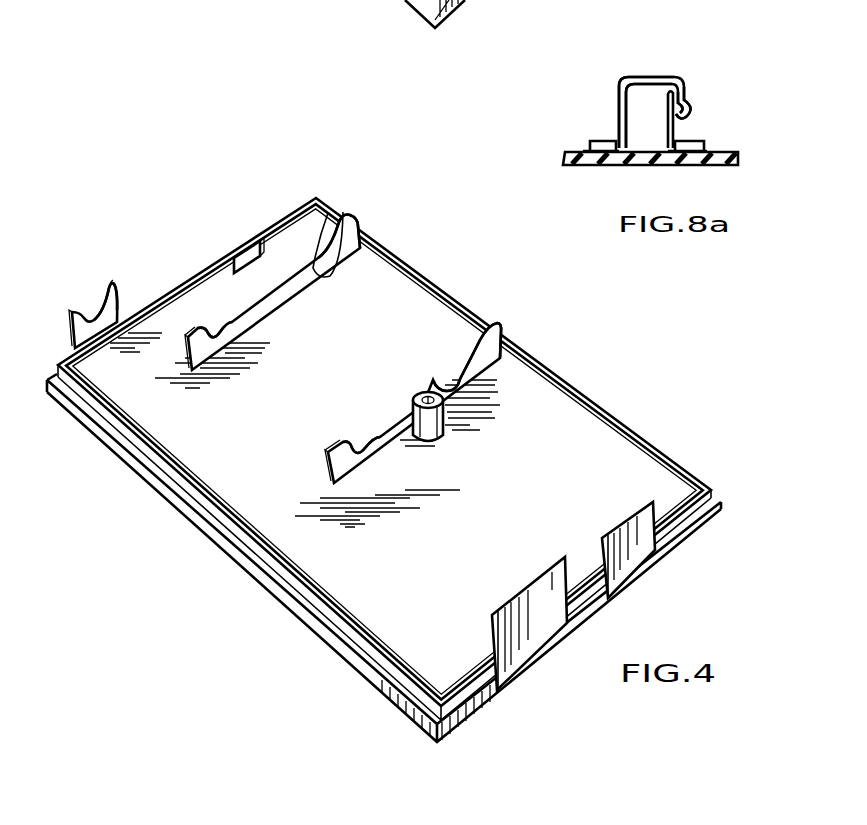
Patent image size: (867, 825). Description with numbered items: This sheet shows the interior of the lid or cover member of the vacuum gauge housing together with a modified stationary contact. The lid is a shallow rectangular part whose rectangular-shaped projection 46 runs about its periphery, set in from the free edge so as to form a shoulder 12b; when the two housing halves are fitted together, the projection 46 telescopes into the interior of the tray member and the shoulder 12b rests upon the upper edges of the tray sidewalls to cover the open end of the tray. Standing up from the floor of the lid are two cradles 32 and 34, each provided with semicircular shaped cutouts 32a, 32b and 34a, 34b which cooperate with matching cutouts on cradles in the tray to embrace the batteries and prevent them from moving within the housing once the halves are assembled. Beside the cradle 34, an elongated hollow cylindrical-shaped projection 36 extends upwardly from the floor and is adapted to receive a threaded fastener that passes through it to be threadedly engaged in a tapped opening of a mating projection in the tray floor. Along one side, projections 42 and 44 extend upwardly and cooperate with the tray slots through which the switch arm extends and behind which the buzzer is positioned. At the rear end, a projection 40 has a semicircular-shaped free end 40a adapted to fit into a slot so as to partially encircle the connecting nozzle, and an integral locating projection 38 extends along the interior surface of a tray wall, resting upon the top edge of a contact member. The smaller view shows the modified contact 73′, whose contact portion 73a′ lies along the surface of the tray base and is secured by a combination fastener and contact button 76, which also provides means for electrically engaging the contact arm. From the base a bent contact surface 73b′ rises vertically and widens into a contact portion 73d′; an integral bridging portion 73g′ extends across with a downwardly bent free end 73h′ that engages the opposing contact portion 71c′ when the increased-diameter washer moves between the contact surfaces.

In FIG. 4, the shoulder 12b is at (187, 498).
In FIG. 4, the rectangular-shaped projection 46 is at (410, 264).
In FIG. 4, the projection 40 is at (133, 313).
In FIG. 4, the semicircular-shaped free end 40a is at (95, 310).
In FIG. 4, the integral locating projection 38 is at (240, 243).
In FIG. 4, the cradle 32 is at (276, 291).
In FIG. 4, the semicircular shaped cutout 32a is at (328, 214).
In FIG. 4, the semicircular shaped cutout 32b is at (233, 330).
In FIG. 4, the cradle 34 is at (352, 456).
In FIG. 4, the semicircular shaped cutout 34a is at (467, 370).
In FIG. 4, the semicircular shaped cutout 34b is at (377, 442).
In FIG. 4, the elongated hollow cylindrical-shaped projection 36 is at (430, 442).
In FIG. 4, the projection 42 is at (527, 603).
In FIG. 4, the projection 44 is at (620, 530).
In FIG. 8A, the modified contact 73′ is at (536, 115).
In FIG. 8A, the contact portion 73a′ is at (602, 166).
In FIG. 8A, the contact surface 73b′ is at (616, 137).
In FIG. 8A, the contact portion 73d′ is at (619, 100).
In FIG. 8A, the integral bridging portion 73g′ is at (650, 78).
In FIG. 8A, the downwardly bent free end 73h′ is at (690, 92).
In FIG. 8A, the combination fastener and contact button 76 is at (597, 130).
In FIG. 8A, the foot 71c′ is at (680, 138).